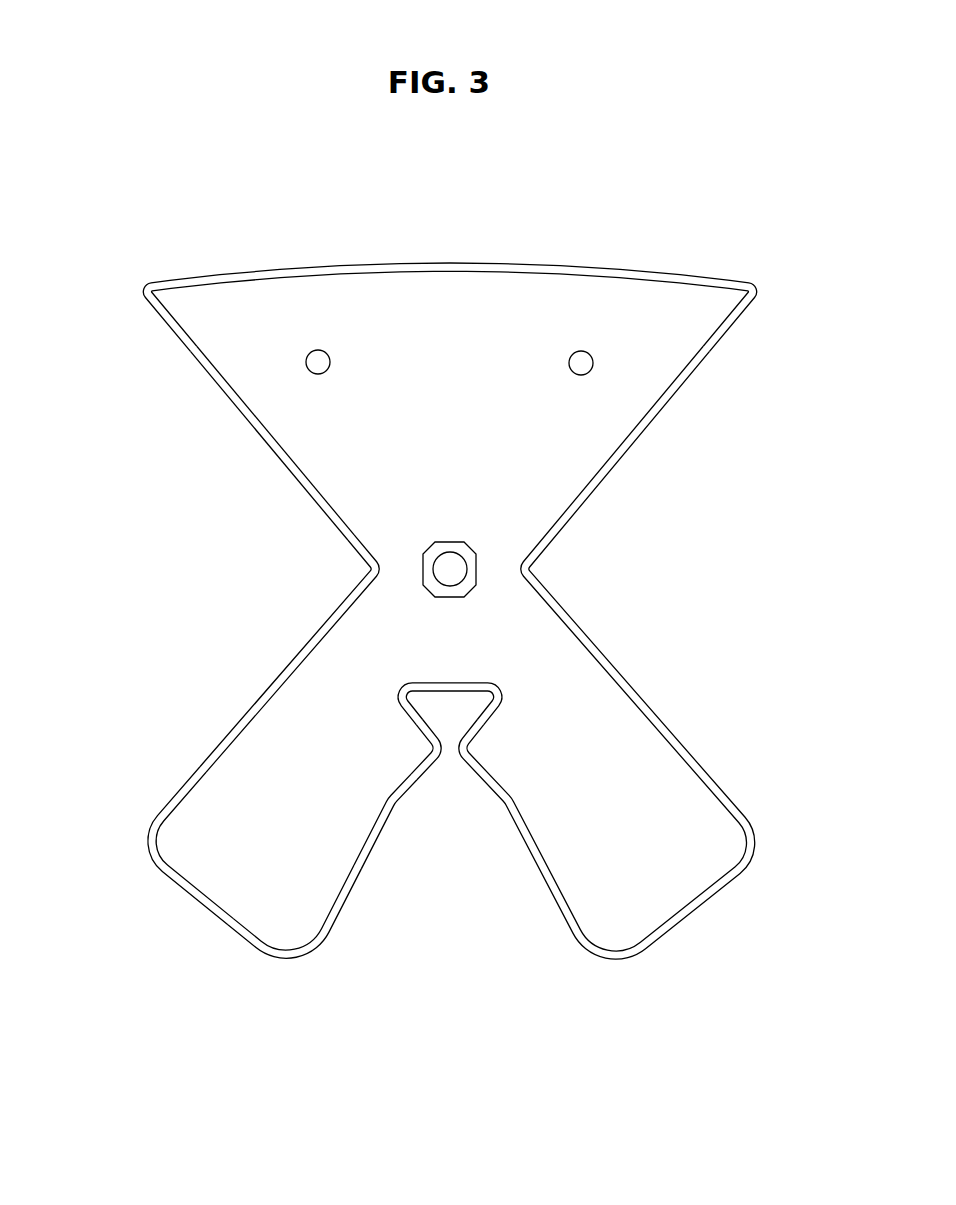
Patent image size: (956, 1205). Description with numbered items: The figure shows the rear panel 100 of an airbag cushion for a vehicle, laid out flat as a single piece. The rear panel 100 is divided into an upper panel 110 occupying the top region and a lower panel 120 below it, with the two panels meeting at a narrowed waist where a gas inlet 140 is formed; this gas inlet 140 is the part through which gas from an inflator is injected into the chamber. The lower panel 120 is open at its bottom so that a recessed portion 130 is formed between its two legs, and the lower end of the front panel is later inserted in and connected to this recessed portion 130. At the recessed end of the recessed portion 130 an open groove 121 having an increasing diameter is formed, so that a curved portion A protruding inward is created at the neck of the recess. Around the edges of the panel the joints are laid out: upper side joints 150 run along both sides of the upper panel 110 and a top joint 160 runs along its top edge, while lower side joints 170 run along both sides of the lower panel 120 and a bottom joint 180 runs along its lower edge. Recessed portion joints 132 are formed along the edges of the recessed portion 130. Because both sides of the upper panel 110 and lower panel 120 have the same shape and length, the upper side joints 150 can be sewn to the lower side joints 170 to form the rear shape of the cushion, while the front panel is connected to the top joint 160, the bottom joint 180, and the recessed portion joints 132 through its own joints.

The rear panel 100 is at (435, 588).
The upper panel 110 is at (470, 355).
The lower panel 120 is at (657, 782).
The open groove 121 is at (409, 714).
The recessed portion 130 is at (352, 877).
The recessed portion joints 132 is at (384, 828).
The gas inlet 140 is at (455, 567).
The upper side joints 150 is at (222, 394).
The top joint 160 is at (288, 271).
The lower side joints 170 is at (195, 773).
The bottom joint 180 is at (196, 905).
The curved portion A is at (433, 753).